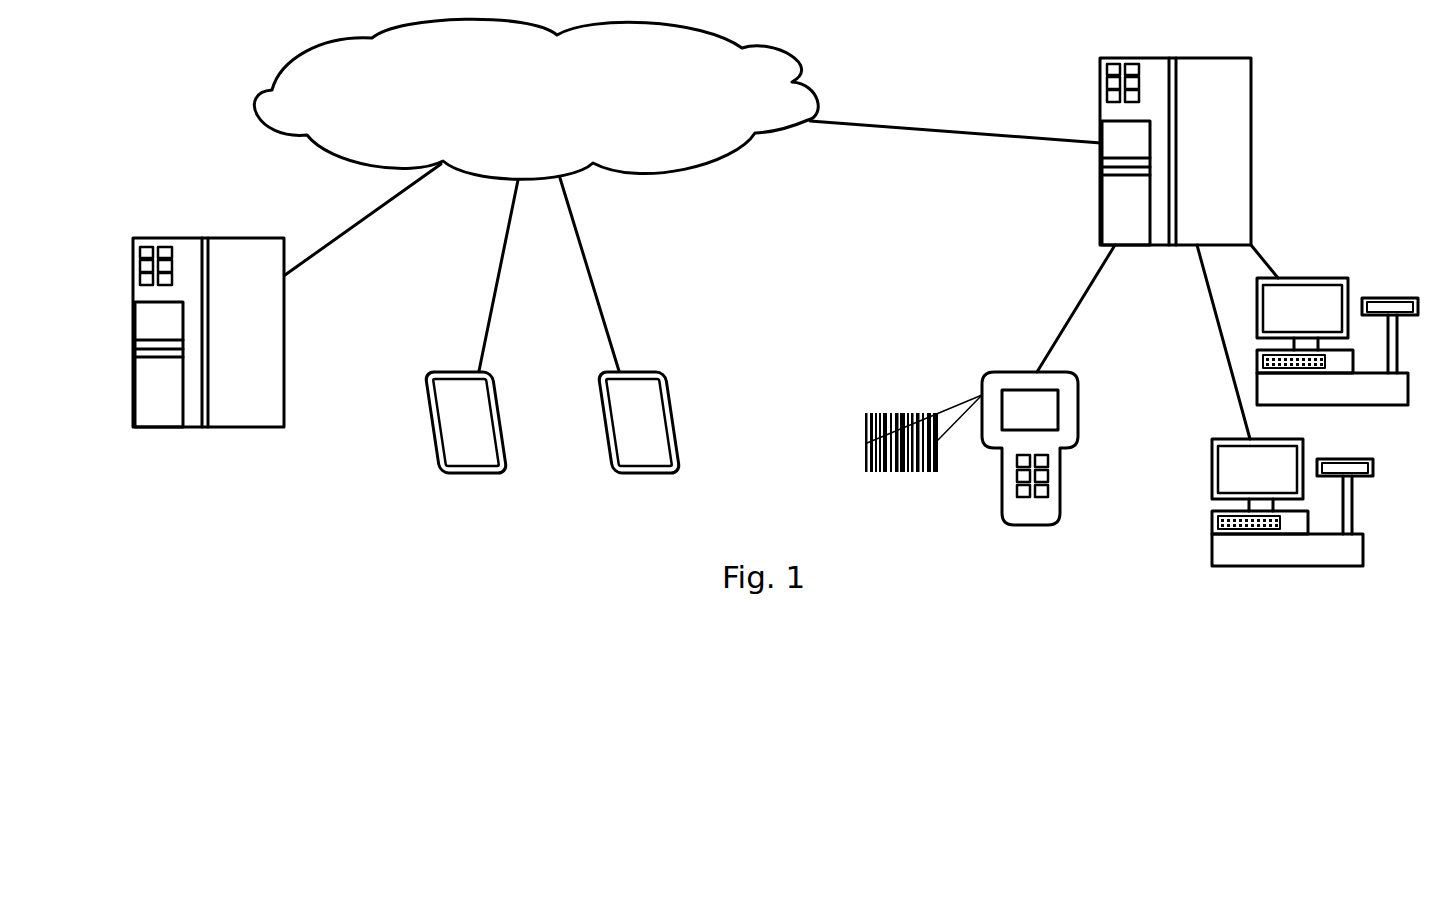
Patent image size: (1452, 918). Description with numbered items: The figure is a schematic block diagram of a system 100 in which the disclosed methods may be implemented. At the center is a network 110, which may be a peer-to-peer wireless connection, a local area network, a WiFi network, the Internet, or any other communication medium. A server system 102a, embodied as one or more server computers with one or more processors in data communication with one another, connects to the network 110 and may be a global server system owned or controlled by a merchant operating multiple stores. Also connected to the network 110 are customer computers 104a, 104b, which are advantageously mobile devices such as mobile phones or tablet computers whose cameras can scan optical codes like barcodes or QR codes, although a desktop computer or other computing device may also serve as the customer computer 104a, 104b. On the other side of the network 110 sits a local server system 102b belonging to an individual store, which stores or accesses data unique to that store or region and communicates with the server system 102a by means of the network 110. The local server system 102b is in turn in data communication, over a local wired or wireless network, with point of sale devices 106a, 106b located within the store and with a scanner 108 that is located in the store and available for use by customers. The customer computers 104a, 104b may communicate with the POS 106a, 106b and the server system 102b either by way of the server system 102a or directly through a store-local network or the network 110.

The system 100 is at (192, 93).
The server system 102a is at (208, 332).
The local server system 102b is at (1157, 248).
The customer computer 104a is at (430, 410).
The customer computer 104b is at (603, 410).
The point of sale (POS) device 106a is at (1337, 341).
The point of sale (POS) device 106b is at (1292, 502).
The scanner 108 is at (998, 383).
The network 110 is at (677, 195).